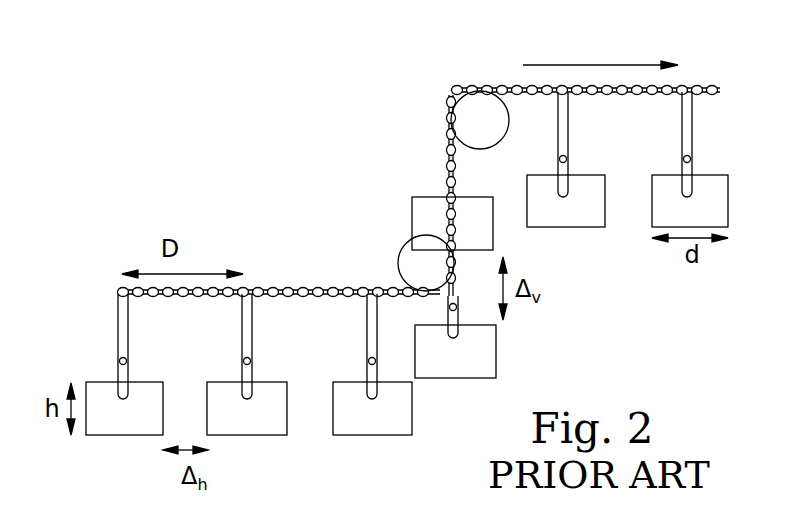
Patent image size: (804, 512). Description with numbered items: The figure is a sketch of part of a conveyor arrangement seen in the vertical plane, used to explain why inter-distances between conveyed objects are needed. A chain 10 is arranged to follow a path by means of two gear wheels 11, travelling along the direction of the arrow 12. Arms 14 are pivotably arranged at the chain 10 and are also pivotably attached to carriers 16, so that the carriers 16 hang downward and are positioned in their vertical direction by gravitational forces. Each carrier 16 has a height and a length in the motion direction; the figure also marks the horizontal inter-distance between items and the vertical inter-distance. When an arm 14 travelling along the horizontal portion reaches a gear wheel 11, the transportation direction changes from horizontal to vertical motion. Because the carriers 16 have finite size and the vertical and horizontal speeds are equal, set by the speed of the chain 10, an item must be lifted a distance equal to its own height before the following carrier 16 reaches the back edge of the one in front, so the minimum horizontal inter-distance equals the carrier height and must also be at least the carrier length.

The chain 10 is at (322, 290).
The gear wheel 11 is at (470, 103).
The arrow 12 is at (601, 63).
The arm 14 is at (570, 141).
The carrier 16 is at (575, 219).